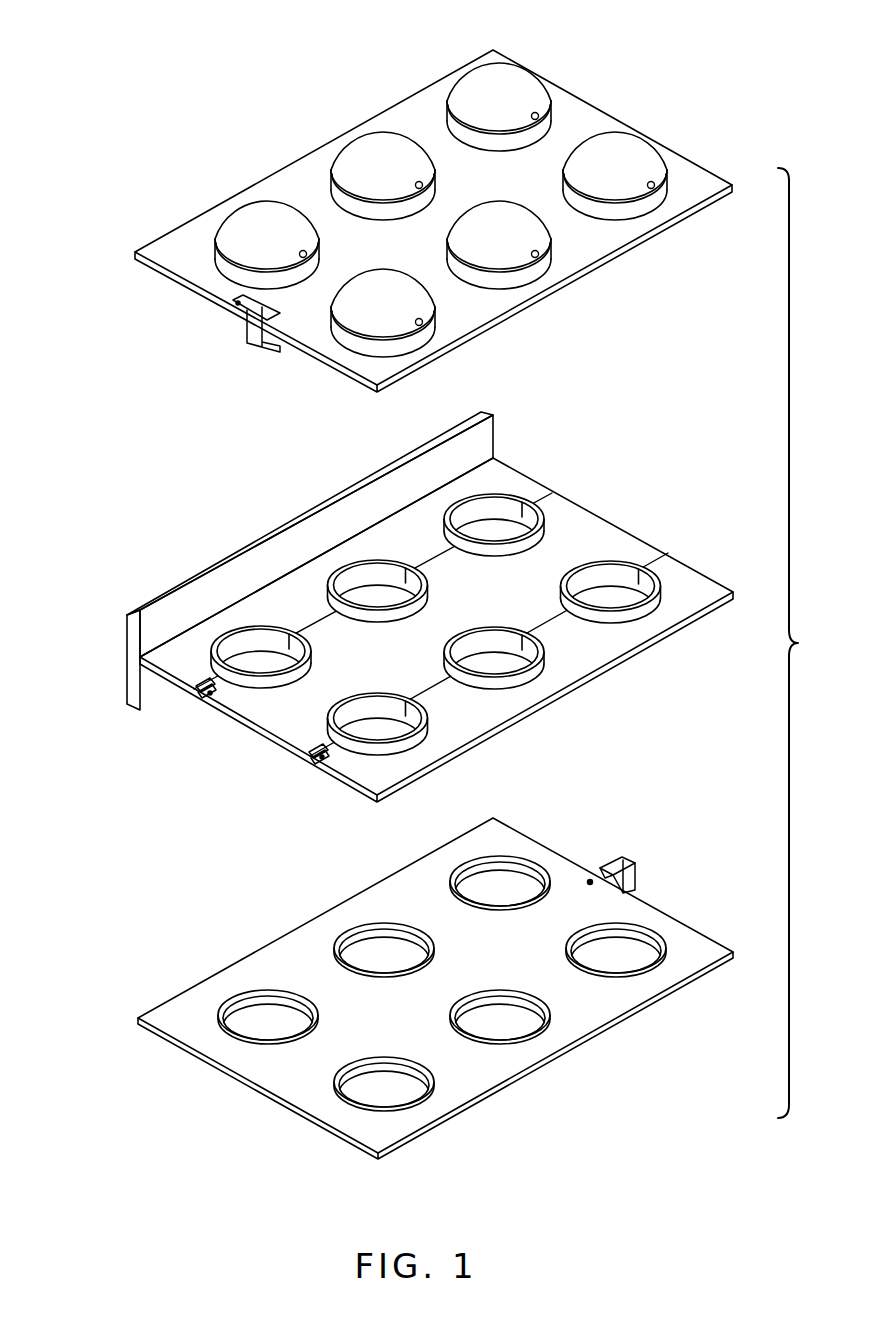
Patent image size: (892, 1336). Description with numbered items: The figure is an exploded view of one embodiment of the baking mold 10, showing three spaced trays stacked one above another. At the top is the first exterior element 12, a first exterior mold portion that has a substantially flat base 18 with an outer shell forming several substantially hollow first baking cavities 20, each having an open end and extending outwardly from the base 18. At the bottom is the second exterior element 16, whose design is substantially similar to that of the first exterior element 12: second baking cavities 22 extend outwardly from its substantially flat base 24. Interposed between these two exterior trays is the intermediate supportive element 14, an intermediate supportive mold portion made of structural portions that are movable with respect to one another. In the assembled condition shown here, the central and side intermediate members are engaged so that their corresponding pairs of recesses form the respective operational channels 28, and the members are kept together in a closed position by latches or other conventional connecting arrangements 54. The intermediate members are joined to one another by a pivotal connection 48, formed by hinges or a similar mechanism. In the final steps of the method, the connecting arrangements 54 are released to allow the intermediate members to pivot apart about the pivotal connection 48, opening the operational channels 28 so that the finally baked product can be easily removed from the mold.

The baking mold 10 is at (102, 330).
The first exterior element 12 is at (457, 214).
The intermediate supportive element 14 is at (593, 532).
The second exterior element 16 is at (435, 961).
The base 18 is at (698, 175).
The first baking cavities 20 is at (520, 88).
The second baking cavities 22 is at (383, 1093).
The base 24 is at (508, 835).
The operational channels 28 is at (620, 597).
The pivotal connection 48 is at (315, 770).
The connecting arrangements 54 is at (242, 332).